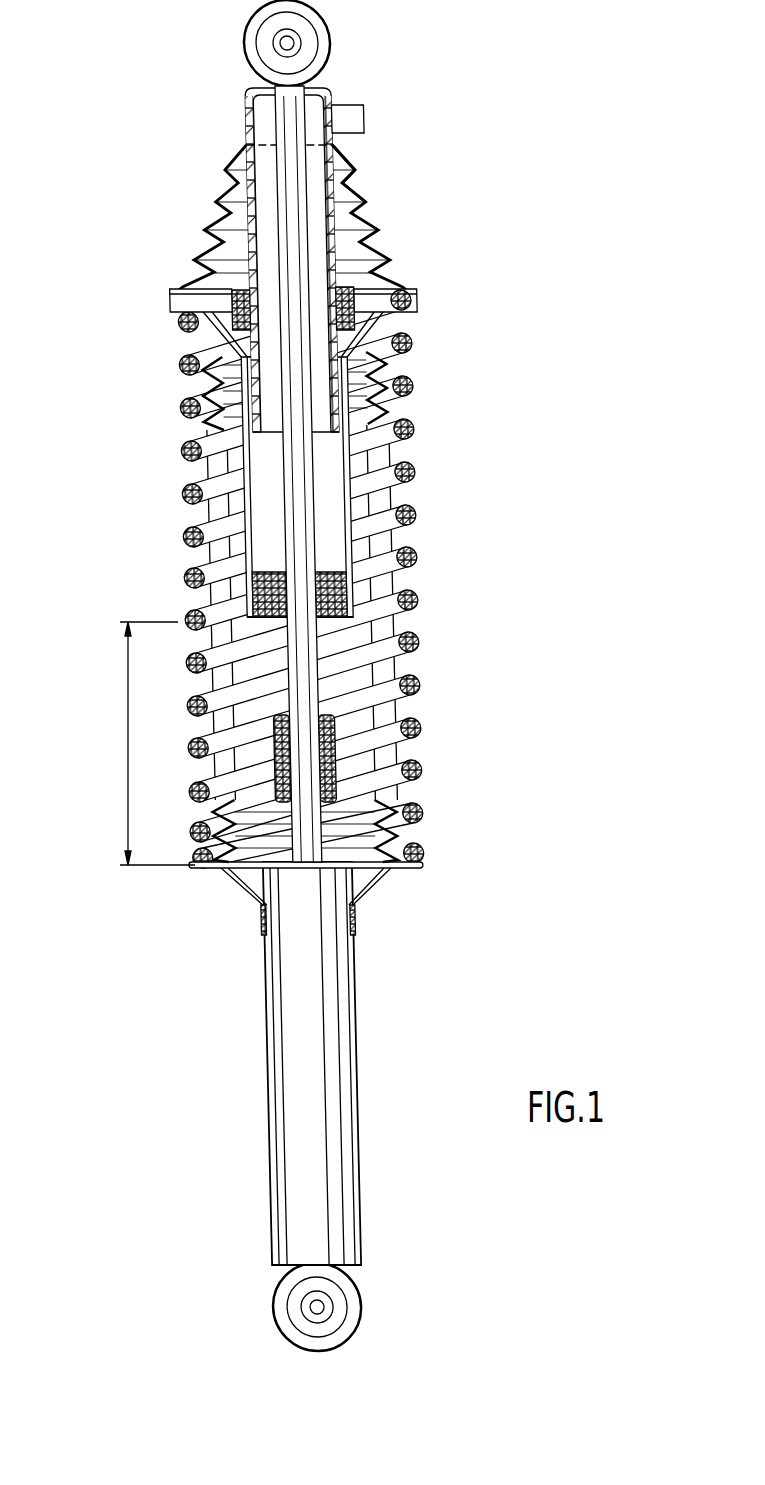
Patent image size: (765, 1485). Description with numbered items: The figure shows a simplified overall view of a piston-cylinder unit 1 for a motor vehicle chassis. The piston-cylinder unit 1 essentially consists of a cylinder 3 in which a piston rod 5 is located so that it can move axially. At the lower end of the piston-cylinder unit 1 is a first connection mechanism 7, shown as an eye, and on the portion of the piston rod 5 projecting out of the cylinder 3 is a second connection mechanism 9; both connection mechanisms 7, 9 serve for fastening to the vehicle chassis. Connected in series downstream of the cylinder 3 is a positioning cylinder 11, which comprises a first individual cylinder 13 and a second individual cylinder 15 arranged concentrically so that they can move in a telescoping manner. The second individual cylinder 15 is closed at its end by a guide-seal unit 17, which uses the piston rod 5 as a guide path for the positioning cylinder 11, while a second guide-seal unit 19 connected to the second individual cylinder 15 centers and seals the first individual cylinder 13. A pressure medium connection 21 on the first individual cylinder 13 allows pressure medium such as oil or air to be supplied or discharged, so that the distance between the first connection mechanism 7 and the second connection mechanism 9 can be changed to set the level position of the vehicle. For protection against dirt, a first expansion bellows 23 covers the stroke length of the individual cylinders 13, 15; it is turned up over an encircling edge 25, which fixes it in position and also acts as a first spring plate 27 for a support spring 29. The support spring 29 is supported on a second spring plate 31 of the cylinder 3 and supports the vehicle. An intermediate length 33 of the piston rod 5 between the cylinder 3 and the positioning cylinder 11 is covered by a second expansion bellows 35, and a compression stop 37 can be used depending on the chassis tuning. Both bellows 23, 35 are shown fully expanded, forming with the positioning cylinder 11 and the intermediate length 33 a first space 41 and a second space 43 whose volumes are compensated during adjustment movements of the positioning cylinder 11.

The piston-cylinder unit 1 is at (295, 675).
The cylinder 3 is at (294, 1027).
The piston rod 5 is at (302, 612).
The first connection mechanism 7 is at (297, 1303).
The second connection mechanism 9 is at (268, 45).
The positioning cylinder 11 is at (362, 452).
The first individual cylinder 13 is at (338, 247).
The second individual cylinder 15 is at (396, 412).
The guide-seal unit 17 is at (392, 577).
The second guide-seal unit 19 is at (398, 290).
The pressure medium connection 21 is at (346, 105).
The first expansion bellows 23 is at (200, 223).
The encircling edge 25 is at (370, 328).
The first spring plate 27 is at (180, 274).
The support spring 29 is at (176, 592).
The second spring plate 31 is at (394, 889).
The intermediate length 33 is at (128, 713).
The second expansion bellows 35 is at (210, 394).
The compression stop 37 is at (340, 748).
The first space 41 is at (357, 187).
The second space 43 is at (347, 644).